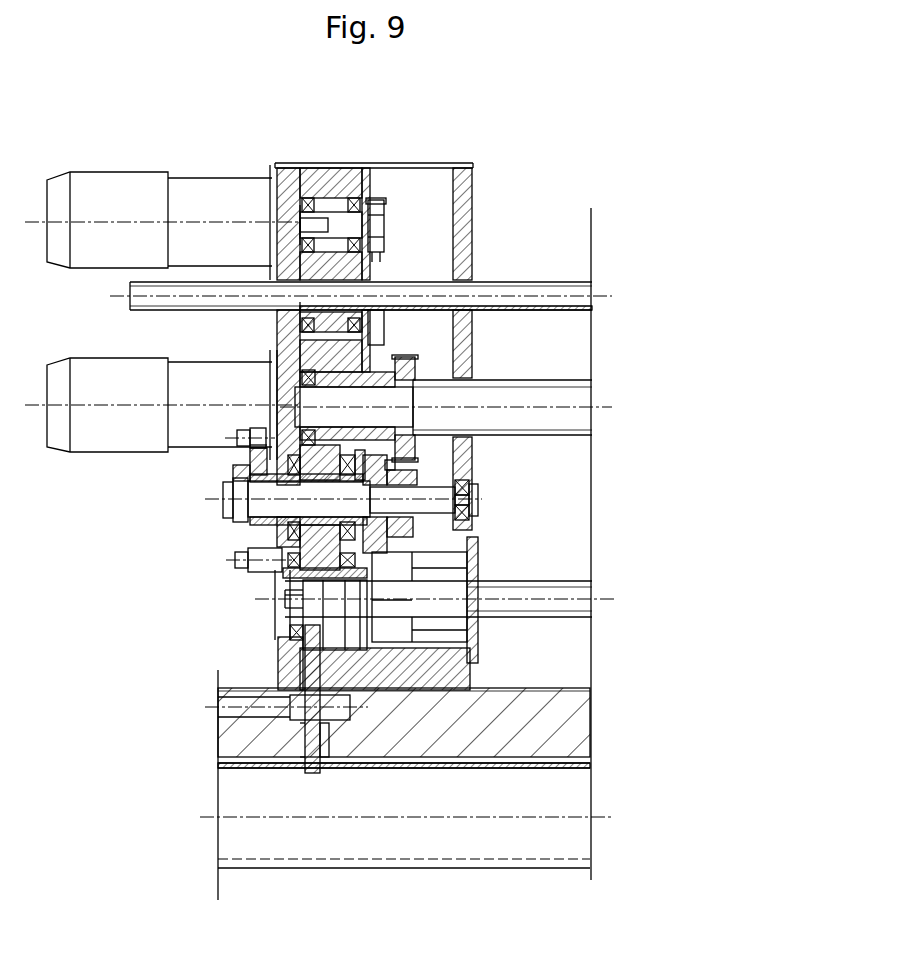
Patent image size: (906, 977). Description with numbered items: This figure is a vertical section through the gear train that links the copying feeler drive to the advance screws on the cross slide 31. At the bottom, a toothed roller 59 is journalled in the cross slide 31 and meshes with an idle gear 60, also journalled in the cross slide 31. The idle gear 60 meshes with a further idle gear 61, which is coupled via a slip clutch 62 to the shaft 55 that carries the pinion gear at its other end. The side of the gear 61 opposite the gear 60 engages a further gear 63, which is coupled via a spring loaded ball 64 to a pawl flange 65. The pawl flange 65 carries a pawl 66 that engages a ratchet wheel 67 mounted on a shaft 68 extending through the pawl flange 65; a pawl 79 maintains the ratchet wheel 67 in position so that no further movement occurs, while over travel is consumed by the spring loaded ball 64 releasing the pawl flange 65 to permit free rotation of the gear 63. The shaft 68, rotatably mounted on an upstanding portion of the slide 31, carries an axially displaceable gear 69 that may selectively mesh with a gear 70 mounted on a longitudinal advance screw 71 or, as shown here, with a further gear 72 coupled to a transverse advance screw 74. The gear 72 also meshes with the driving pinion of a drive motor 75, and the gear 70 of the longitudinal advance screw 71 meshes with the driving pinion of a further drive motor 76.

The drive motor 75 is at (120, 188).
The further drive motor 76 is at (118, 378).
The further gear 72 is at (383, 262).
The transverse advance screw 74 is at (564, 313).
The gear 70 is at (413, 362).
The longitudinal advance screw 71 is at (559, 422).
The axially displaceable gear 69 is at (382, 468).
The shaft 68 is at (344, 514).
The pawl 66 is at (240, 441).
The ratchet wheel 67 is at (240, 457).
The pawl flange 65 is at (241, 474).
The further gear 63 is at (290, 486).
The spring loaded ball 64 is at (318, 483).
The pawl 79 is at (243, 566).
The further idle gear 61 is at (284, 637).
The slip clutch 62 is at (447, 568).
The shaft 55 is at (497, 608).
The cross slide 31 is at (464, 737).
The idle gear 60 is at (305, 745).
The toothed roller 59 is at (398, 845).